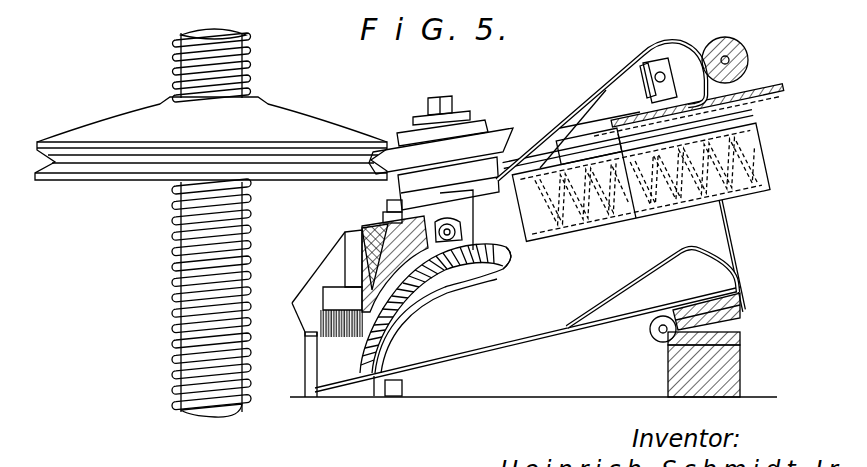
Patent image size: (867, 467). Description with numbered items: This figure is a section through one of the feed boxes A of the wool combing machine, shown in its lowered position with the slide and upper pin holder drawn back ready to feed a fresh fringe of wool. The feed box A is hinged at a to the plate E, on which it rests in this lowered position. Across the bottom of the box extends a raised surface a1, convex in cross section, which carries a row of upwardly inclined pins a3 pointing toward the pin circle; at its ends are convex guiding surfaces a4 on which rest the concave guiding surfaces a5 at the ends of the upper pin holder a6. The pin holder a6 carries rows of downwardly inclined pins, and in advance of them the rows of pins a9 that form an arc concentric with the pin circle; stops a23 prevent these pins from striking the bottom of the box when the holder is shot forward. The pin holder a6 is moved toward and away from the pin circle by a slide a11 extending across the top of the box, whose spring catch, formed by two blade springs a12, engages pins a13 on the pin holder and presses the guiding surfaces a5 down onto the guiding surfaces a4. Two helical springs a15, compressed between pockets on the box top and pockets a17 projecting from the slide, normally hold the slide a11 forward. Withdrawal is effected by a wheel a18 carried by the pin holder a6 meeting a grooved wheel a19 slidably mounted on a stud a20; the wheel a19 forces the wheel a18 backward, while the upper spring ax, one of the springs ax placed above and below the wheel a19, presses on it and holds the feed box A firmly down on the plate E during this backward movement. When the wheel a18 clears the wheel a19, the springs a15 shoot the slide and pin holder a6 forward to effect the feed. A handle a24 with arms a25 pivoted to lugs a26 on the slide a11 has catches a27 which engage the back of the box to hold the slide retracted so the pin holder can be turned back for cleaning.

The hinge a is at (652, 336).
The spring ax is at (176, 70).
The stud or shaft a20 is at (247, 59).
The wheel a19 is at (322, 157).
The wheel a18 is at (486, 140).
The pockets a17 is at (572, 224).
The helical springs a15 is at (680, 197).
The blade springs a12 is at (580, 122).
The slide a11 is at (598, 128).
The catches a27 is at (736, 98).
The arms a25 is at (677, 68).
The lugs a26 is at (653, 66).
The handle a24 is at (742, 46).
The pins a13 is at (456, 232).
The stops a23 is at (365, 335).
The convex guiding surfaces a4 is at (362, 335).
The pins a9 is at (328, 356).
The raised surface a1 is at (400, 313).
The pins a3 is at (445, 288).
The concave guiding surfaces a5 is at (486, 274).
The pin holder a6 is at (505, 261).
The feed box A is at (519, 298).
The plate E is at (597, 397).